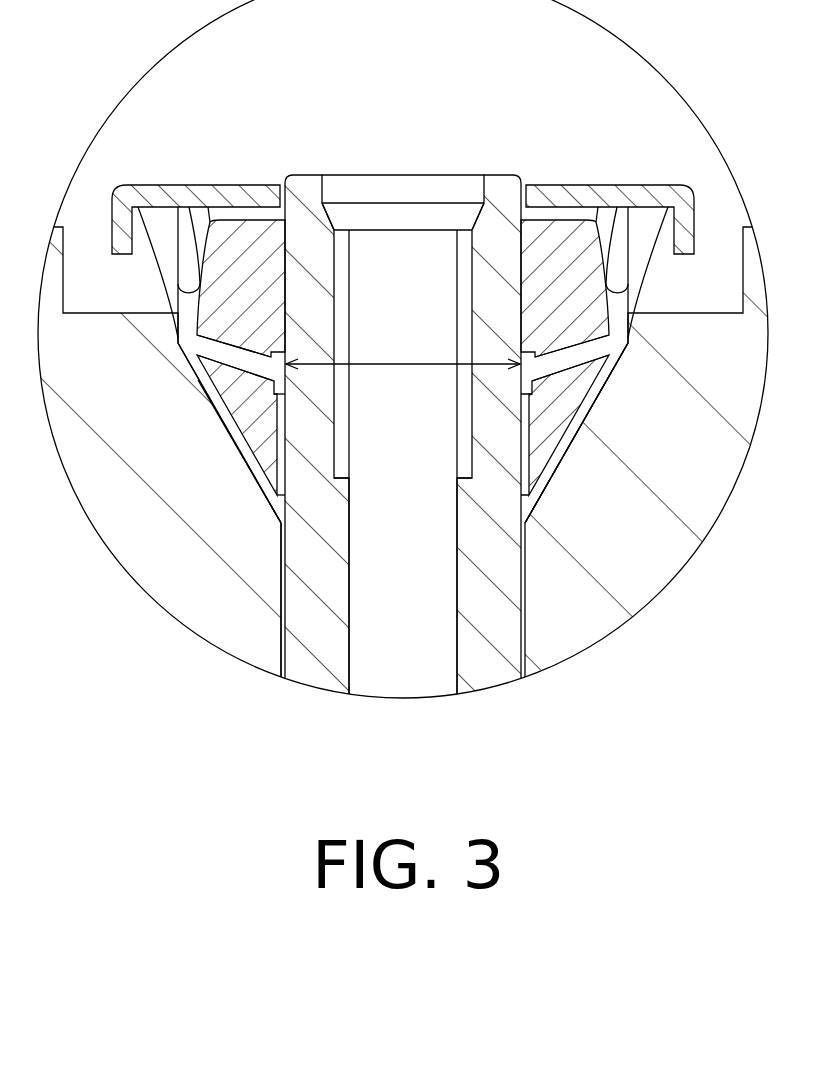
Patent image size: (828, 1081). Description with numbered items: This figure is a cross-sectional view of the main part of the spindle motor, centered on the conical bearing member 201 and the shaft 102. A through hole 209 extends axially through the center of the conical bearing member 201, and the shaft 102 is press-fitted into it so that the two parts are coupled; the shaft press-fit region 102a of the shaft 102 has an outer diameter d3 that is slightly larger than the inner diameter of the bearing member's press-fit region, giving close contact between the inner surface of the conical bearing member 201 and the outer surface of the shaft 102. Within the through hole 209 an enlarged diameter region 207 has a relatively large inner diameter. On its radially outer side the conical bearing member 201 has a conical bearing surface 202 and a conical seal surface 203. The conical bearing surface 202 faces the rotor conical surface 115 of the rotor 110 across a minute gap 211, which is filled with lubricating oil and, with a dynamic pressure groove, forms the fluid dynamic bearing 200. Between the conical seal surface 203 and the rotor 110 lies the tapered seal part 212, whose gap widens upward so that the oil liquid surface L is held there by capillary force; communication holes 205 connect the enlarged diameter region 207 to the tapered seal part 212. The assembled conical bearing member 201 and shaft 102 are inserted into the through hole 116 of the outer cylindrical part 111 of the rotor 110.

The shaft 102 is at (305, 174).
The shaft press-fit region 102a is at (281, 200).
The rotor 110 is at (650, 572).
The outer cylindrical part 111 is at (190, 598).
The rotor conical surface 115 is at (240, 414).
The through hole 116 is at (303, 625).
The fluid dynamic bearing 200 is at (577, 455).
The conical bearing member 201 is at (544, 205).
The conical bearing surface 202 is at (196, 362).
The conical seal surface 203 is at (219, 218).
The communication hole 205 is at (262, 354).
The enlarged diameter region 207 is at (510, 374).
The through hole 209 is at (428, 585).
The gap 211 is at (241, 438).
The tapered seal part 212 is at (129, 189).
The liquid surface L is at (185, 190).
The outer diameter d3 is at (403, 353).